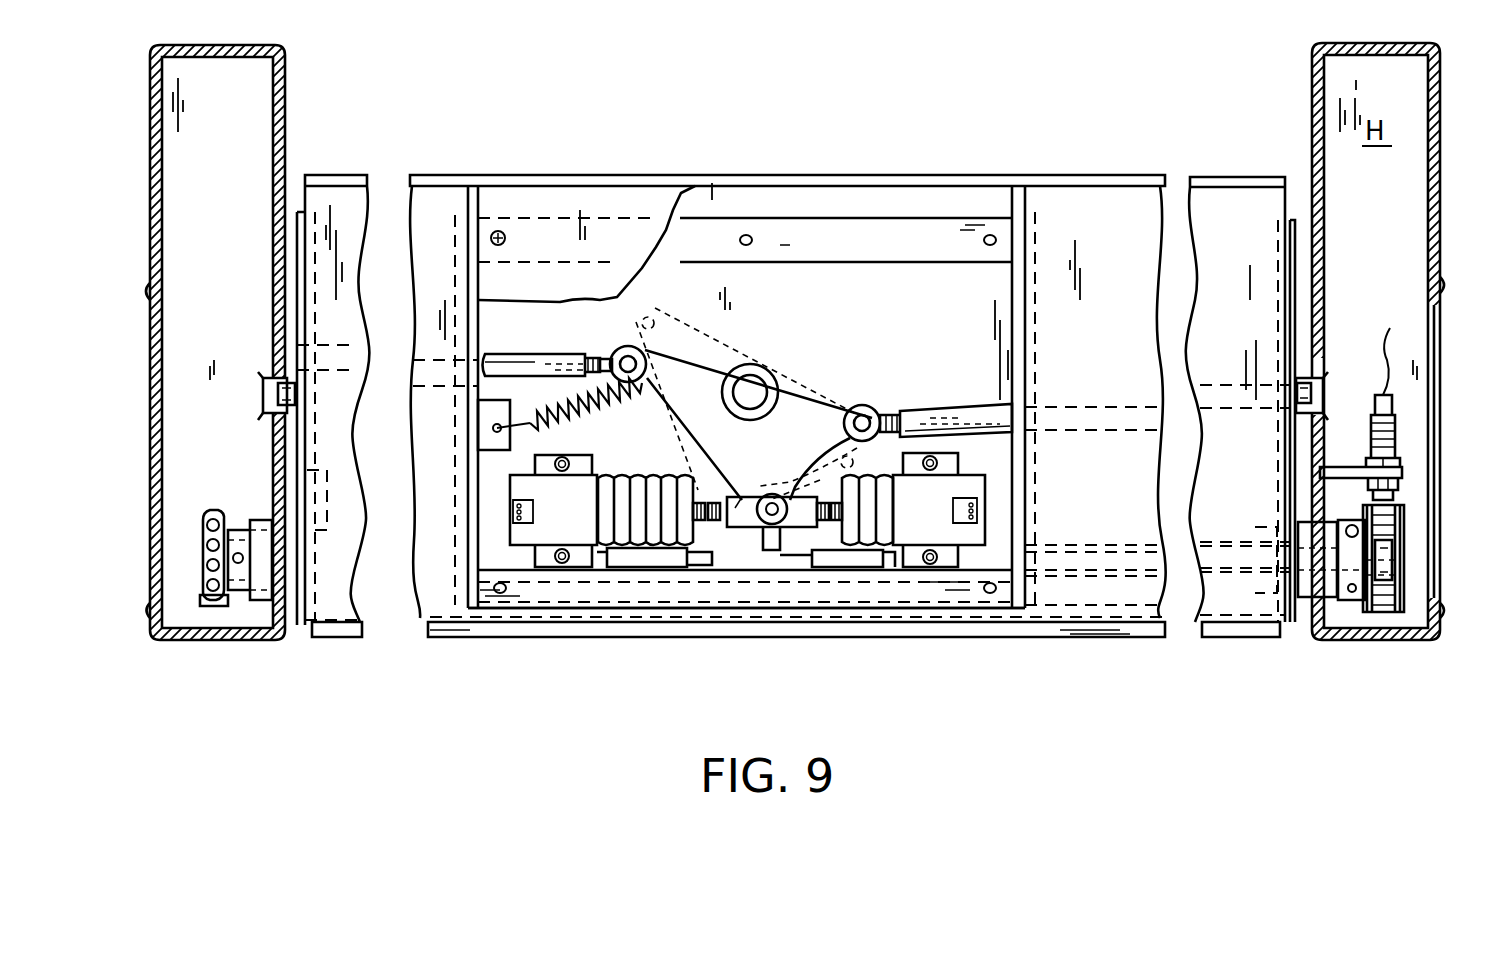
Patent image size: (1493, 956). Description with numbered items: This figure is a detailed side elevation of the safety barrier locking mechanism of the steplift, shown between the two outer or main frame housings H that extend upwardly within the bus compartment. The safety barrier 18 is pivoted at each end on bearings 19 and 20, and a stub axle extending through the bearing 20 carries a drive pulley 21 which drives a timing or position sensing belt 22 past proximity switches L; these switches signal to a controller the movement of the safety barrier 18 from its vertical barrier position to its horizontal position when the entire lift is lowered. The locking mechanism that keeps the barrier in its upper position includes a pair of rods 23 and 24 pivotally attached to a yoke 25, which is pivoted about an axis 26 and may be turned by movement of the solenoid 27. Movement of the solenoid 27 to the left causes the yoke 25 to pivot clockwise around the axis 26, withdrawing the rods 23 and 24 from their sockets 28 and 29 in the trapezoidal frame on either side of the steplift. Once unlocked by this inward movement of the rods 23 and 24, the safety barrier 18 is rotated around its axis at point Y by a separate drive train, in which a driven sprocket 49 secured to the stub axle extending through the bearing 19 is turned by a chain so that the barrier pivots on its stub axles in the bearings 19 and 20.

The safety barrier 18 is at (1010, 637).
The bearing 19 is at (258, 600).
The bearing 20 is at (1330, 602).
The drive pulley 21 is at (1380, 614).
The timing or position sensing belt 22 is at (1392, 508).
The rod 23 is at (543, 338).
The rod 24 is at (958, 410).
The yoke 25 is at (828, 391).
The axis 26 is at (750, 400).
The solenoid 27 is at (582, 526).
The socket 28 is at (265, 413).
The socket 29 is at (1325, 380).
The driven sprocket 49 is at (212, 512).
The main frame housing H is at (232, 146).
The proximity switches L is at (1361, 397).
The point Y is at (202, 560).